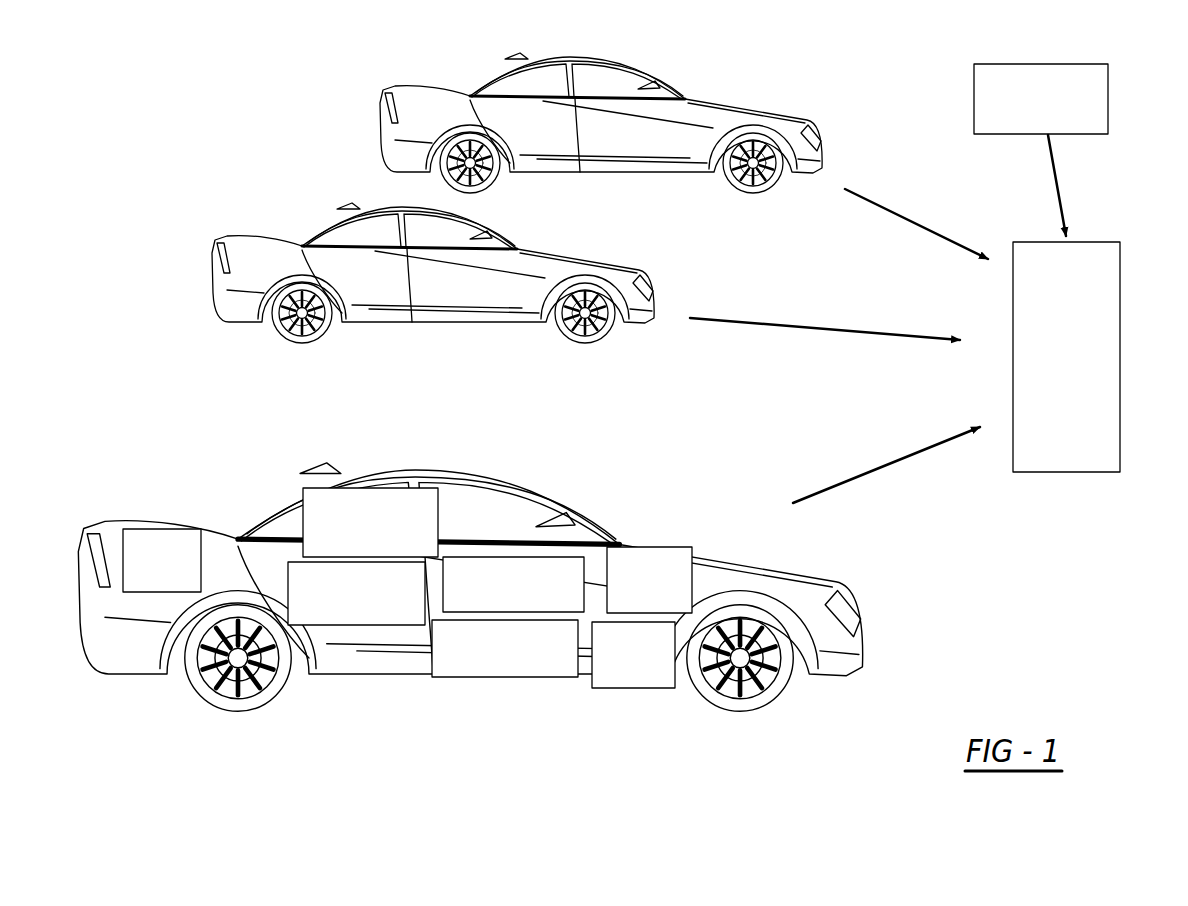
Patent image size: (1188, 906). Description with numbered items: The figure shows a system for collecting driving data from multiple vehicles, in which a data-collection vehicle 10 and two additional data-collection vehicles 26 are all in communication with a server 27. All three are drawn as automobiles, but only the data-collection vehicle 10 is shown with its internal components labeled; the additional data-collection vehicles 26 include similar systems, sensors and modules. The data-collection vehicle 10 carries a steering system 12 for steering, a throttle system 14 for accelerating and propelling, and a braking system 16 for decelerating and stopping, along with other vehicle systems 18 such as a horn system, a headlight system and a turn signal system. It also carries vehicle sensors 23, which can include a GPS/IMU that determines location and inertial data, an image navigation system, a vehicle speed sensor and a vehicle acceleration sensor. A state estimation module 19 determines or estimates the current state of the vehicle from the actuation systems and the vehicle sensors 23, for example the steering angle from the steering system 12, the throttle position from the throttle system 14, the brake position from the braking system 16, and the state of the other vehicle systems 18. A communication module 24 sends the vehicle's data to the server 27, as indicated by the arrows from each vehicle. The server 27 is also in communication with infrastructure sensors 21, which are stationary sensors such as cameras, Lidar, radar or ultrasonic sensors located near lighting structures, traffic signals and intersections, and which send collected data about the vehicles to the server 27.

The data-collection vehicle 10 is at (268, 418).
The steering system 12 is at (692, 578).
The throttle system 14 is at (660, 688).
The braking system 16 is at (190, 529).
The other vehicle systems 18 is at (357, 488).
The state estimation module 19 is at (530, 677).
The infrastructure sensors 21 is at (1108, 98).
The vehicle sensors 23 is at (348, 625).
The communication module 24 is at (520, 557).
The additional data-collection vehicles 26 is at (380, 138).
The server 27 is at (1067, 472).